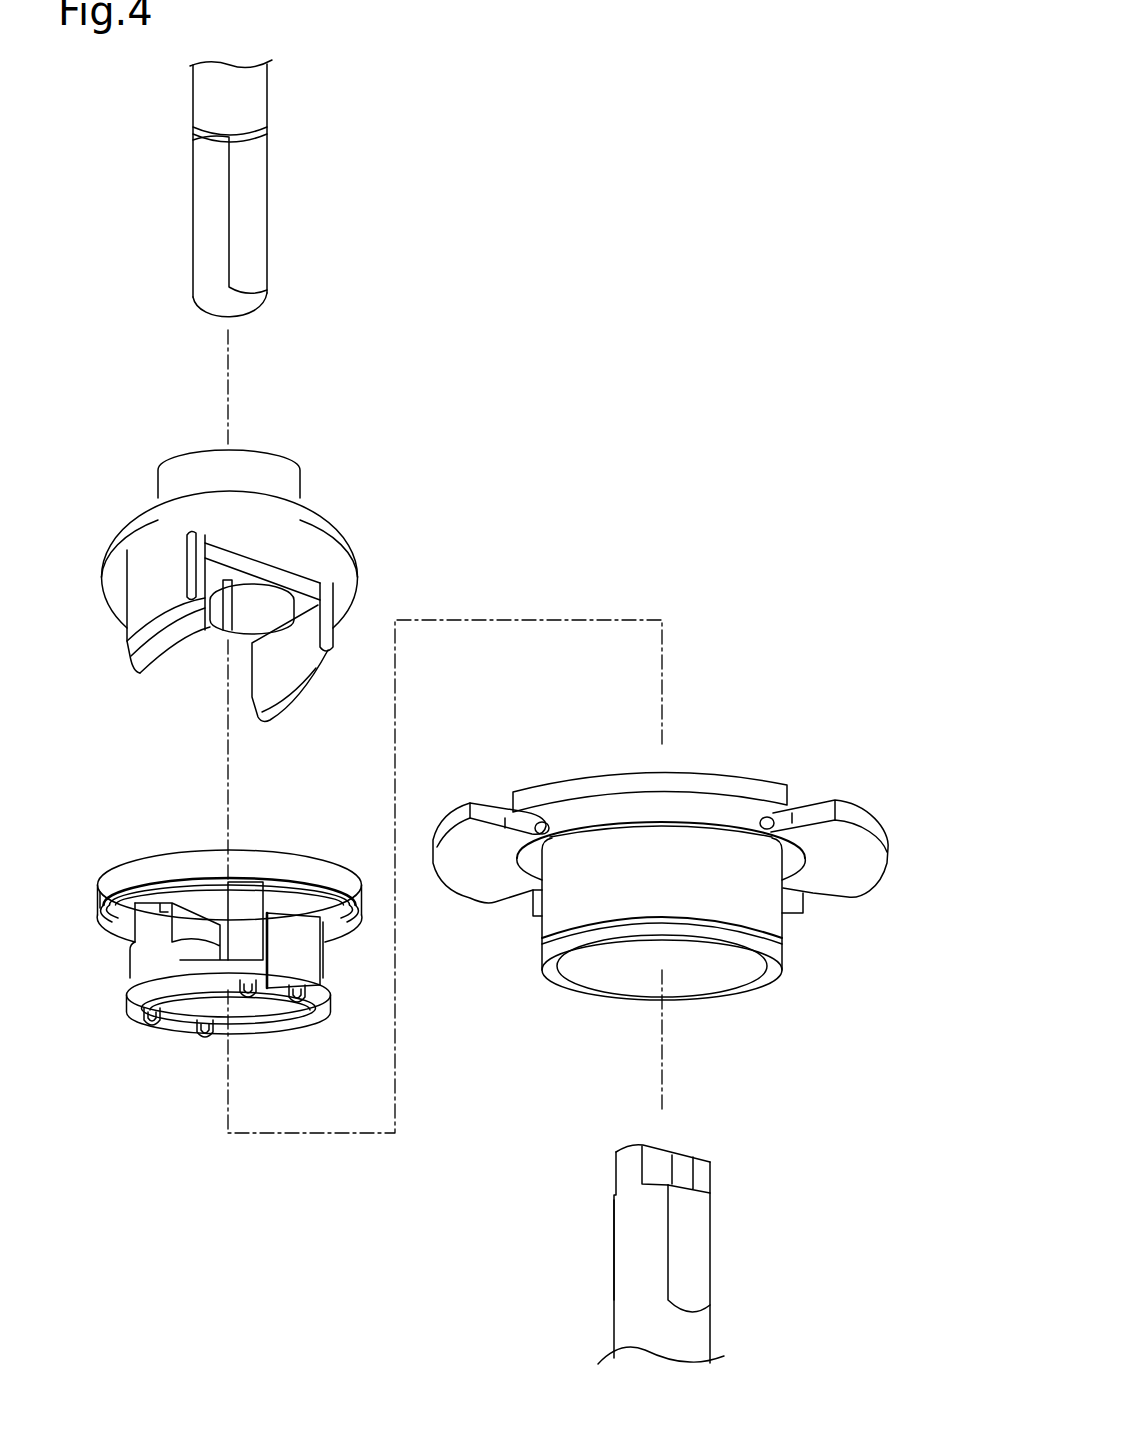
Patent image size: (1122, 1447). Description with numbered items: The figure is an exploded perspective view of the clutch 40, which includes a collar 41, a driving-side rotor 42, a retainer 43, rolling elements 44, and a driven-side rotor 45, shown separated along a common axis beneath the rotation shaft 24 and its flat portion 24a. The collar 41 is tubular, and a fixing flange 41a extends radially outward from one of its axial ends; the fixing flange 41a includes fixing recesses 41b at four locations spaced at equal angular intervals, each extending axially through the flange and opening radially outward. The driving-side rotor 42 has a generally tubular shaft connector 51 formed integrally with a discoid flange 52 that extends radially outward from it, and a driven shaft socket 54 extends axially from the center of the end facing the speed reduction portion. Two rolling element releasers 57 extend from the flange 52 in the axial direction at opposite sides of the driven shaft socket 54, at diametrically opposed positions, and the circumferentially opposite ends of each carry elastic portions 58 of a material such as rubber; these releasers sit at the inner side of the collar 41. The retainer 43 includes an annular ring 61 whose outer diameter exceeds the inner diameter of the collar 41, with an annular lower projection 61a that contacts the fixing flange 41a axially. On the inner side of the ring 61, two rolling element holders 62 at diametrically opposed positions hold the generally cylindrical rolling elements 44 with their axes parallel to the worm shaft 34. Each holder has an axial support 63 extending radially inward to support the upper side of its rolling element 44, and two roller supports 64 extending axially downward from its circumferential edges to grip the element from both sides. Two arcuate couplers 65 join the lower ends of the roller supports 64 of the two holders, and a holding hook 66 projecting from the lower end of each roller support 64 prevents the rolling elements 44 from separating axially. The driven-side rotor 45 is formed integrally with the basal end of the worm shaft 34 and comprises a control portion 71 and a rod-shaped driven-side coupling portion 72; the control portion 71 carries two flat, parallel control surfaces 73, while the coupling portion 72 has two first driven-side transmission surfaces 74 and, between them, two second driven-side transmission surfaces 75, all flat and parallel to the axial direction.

The rotation shaft 24 is at (266, 87).
The flat portion of rod 24a is at (262, 217).
The worm shaft 34 is at (656, 1226).
The clutch 40 is at (660, 811).
The collar 41 is at (786, 932).
The fixing flange 41a is at (725, 788).
The fixing recesses 41b is at (548, 848).
The driving-side rotor 42 is at (234, 566).
The retainer 43 is at (224, 947).
The rolling elements 44 is at (322, 970).
The driven-side rotor 45 is at (656, 1200).
The shaft connector 51 is at (205, 462).
The flange 52 is at (123, 533).
The driven shaft socket 54 is at (218, 634).
The rolling element releasers 57 is at (127, 610).
The elastic portions 58 is at (188, 570).
The ring 61 is at (343, 876).
The lower projection 61a is at (113, 883).
The rolling element holders 62 is at (300, 848).
The axial support 63 is at (229, 901).
The roller supports 64 is at (246, 877).
The couplers 65 is at (140, 1010).
The holding hook 66 is at (158, 1030).
The control portion 71 is at (618, 1235).
The driven-side coupling portion 72 is at (622, 1172).
The control surfaces 73 is at (700, 1248).
The first driven-side transmission surfaces 74 is at (705, 1175).
The second driven-side transmission surfaces 75 is at (655, 1150).